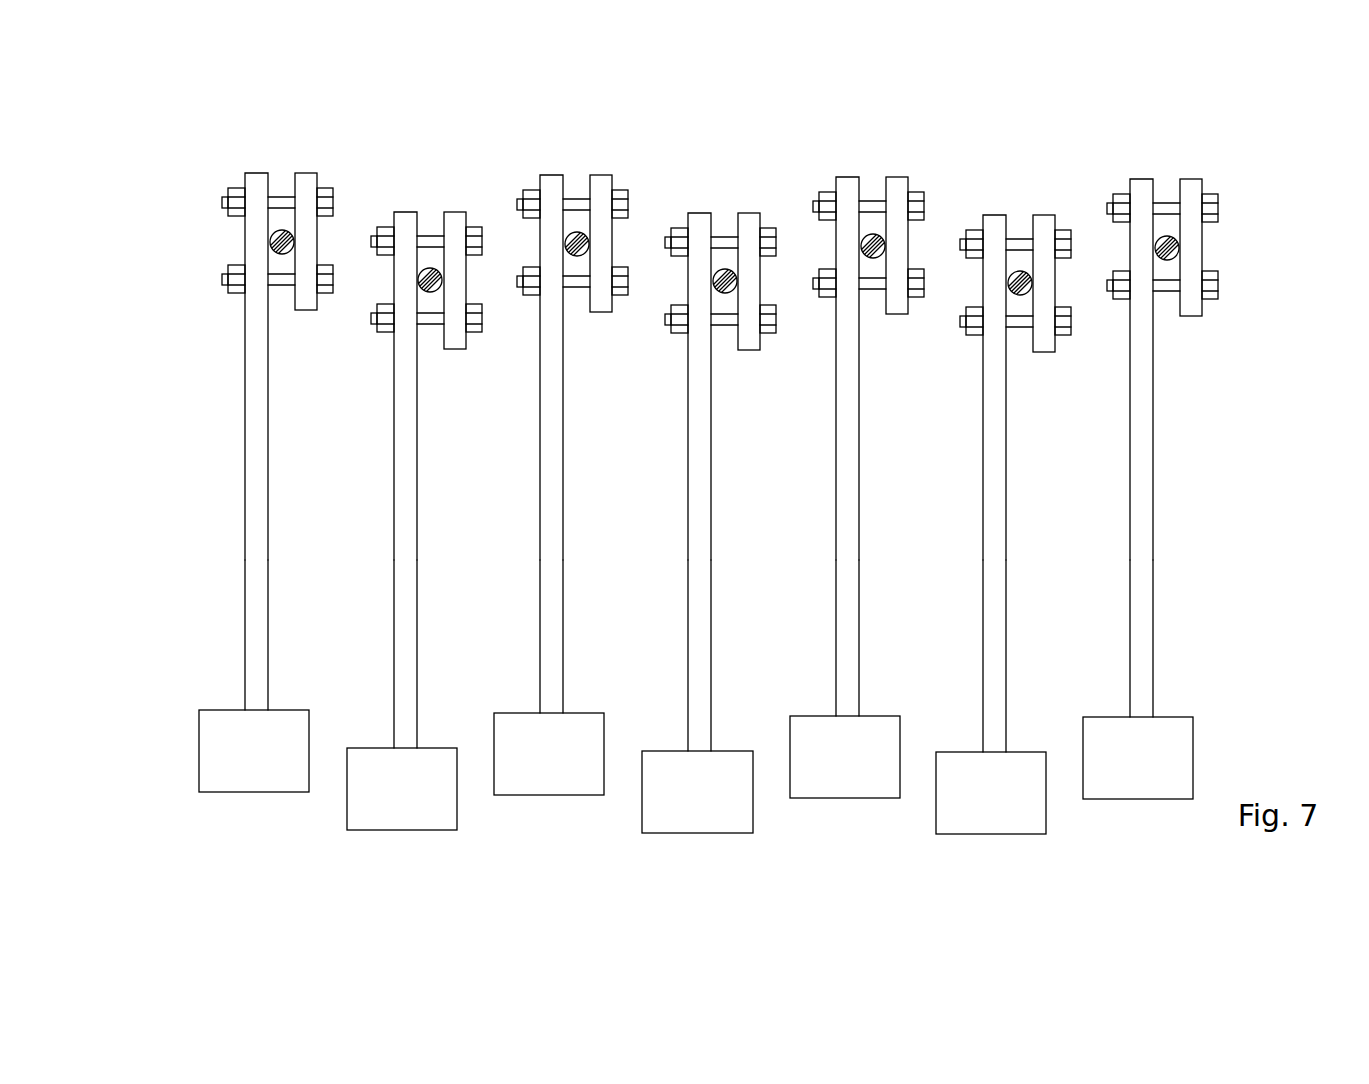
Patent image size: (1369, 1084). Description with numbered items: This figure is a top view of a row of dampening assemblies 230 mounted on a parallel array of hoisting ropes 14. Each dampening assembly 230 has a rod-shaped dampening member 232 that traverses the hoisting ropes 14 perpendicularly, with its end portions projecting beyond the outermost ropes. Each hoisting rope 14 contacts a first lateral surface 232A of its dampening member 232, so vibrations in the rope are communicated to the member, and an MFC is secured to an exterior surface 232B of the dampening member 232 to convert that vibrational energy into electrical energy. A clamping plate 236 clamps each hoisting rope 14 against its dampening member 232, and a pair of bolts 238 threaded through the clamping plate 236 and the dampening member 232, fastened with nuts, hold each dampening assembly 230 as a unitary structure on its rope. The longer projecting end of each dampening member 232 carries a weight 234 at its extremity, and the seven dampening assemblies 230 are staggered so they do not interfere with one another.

The dampening assembly 230 is at (197, 478).
The dampening member 232 is at (697, 462).
The first lateral surface 232A is at (268, 420).
The exterior surface 232B is at (247, 608).
The weight 234 is at (254, 780).
The clamping plate 236 is at (303, 178).
The bolts 238 is at (328, 277).
The hoisting ropes 14 is at (282, 255).